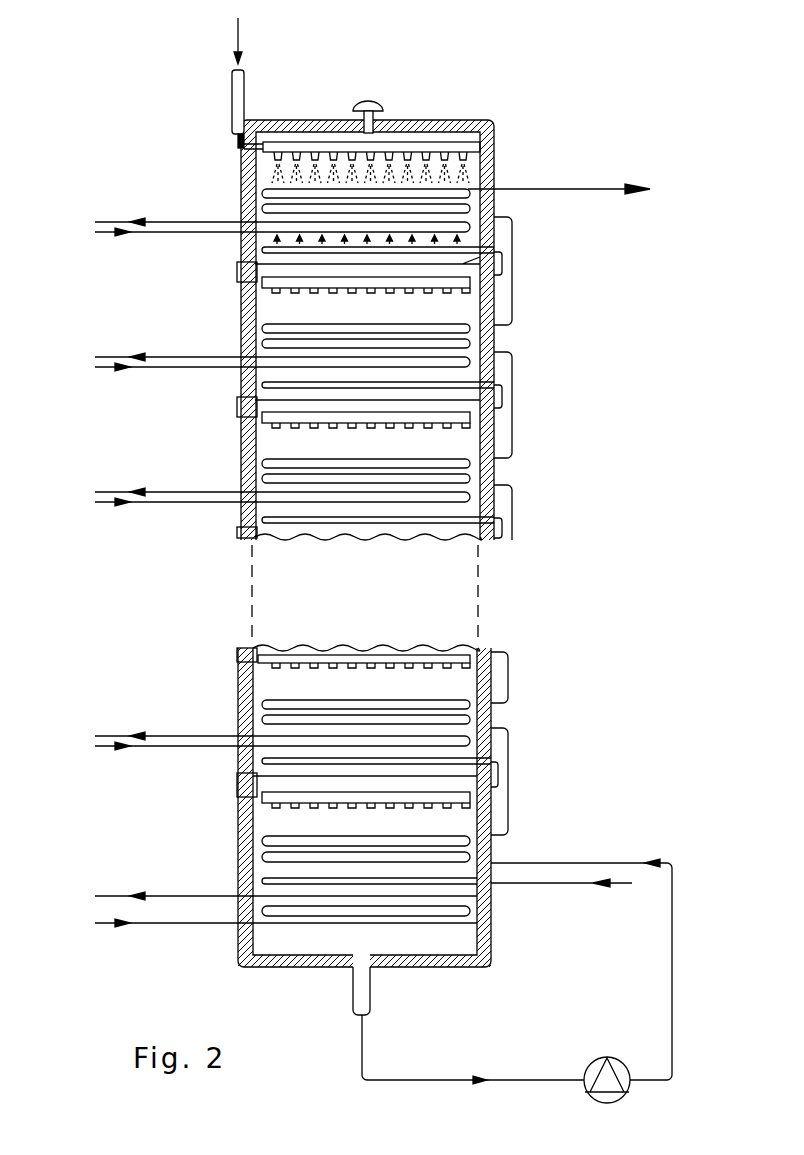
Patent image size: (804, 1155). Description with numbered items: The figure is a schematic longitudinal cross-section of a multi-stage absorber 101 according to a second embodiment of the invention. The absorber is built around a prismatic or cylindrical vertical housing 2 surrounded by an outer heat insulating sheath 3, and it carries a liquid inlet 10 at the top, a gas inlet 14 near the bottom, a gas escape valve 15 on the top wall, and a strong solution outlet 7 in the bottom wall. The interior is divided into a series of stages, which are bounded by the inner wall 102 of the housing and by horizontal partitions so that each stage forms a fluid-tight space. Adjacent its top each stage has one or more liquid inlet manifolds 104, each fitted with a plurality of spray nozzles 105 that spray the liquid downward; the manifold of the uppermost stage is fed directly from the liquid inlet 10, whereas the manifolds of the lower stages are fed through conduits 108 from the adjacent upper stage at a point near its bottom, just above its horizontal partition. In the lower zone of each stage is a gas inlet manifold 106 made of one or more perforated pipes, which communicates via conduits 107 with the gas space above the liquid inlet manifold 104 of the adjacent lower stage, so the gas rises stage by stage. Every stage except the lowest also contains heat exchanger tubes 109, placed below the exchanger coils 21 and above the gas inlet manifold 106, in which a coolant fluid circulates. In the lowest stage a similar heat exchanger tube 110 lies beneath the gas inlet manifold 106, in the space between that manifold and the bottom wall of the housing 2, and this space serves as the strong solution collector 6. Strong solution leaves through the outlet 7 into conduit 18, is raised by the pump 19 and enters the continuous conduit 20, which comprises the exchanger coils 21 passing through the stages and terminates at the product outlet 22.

The multi-stage absorber 101 is at (377, 536).
The inner wall 102 is at (478, 146).
The liquid inlet 10 is at (231, 87).
The liquid inlet manifold 104 is at (290, 146).
The spray nozzles 105 is at (326, 162).
The gas escape valve 15 is at (372, 100).
The exchanger coils 21 is at (262, 193).
The heat exchanger tubes 109 is at (262, 224).
The continuous conduit 20 is at (470, 188).
The product outlet 22 is at (592, 188).
The conduits 107 is at (502, 266).
The conduits 108 is at (237, 274).
The gas inlet manifold 106 is at (303, 518).
The outer heat insulating sheath 3 is at (494, 343).
The vertical housing 2 is at (484, 647).
The strong solution collector 6 is at (297, 942).
The strong solution outlet 7 is at (352, 988).
The conduit 18 is at (407, 1078).
The pump 19 is at (586, 1062).
The gas inlet 14 is at (560, 885).
The heat exchanger tube 110 is at (225, 926).